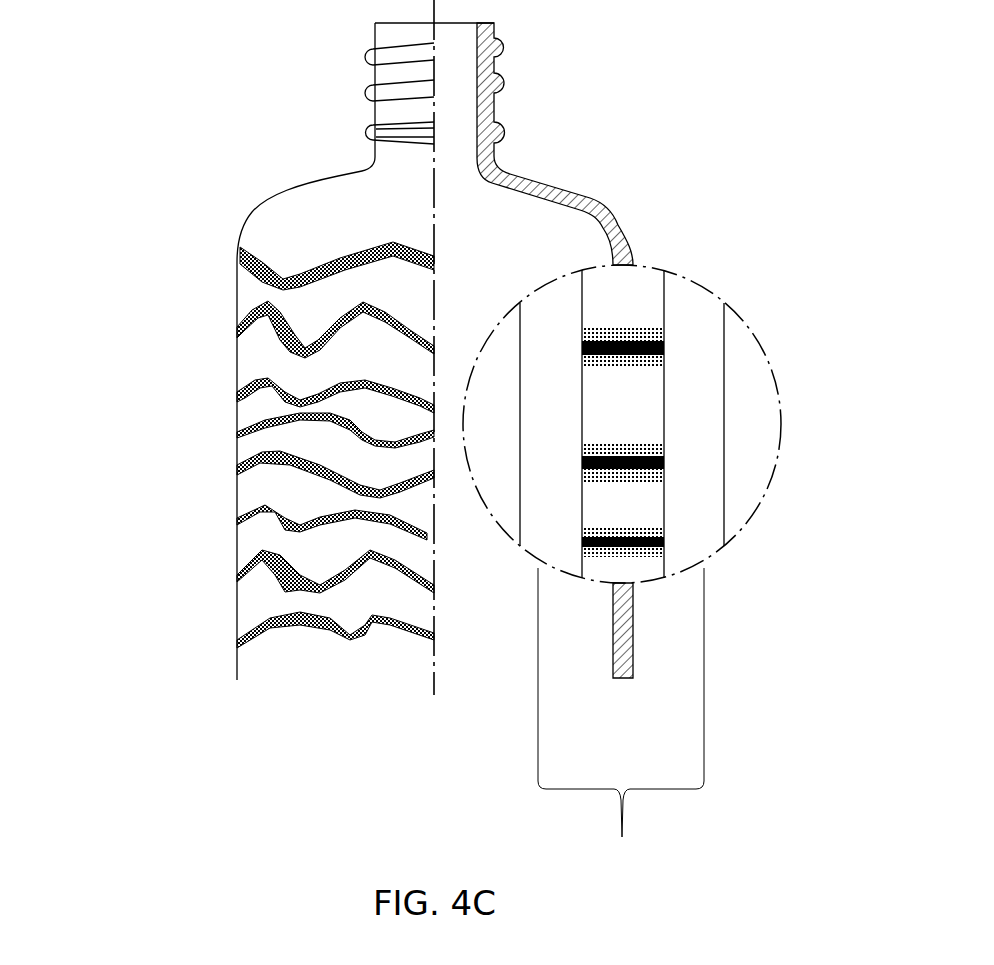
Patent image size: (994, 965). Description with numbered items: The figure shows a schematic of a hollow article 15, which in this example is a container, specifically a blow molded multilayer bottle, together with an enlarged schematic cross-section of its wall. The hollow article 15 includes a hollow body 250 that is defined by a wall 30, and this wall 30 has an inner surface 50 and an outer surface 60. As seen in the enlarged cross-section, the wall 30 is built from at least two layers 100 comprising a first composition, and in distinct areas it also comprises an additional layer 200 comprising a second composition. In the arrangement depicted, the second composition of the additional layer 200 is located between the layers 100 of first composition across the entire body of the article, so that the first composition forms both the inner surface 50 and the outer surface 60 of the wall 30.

The hollow article 15 is at (213, 226).
The wall 30 is at (621, 720).
The inner surface 50 is at (522, 503).
The outer surface 60 is at (725, 514).
The layers 100 is at (252, 368).
The additional layer 200 is at (282, 588).
The hollow body 250 is at (484, 240).